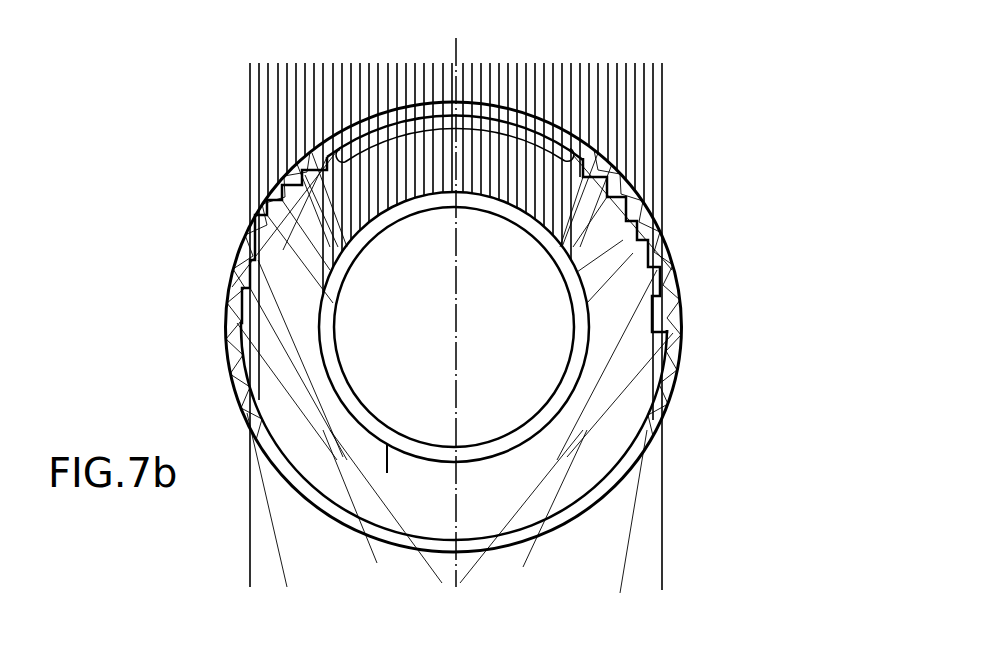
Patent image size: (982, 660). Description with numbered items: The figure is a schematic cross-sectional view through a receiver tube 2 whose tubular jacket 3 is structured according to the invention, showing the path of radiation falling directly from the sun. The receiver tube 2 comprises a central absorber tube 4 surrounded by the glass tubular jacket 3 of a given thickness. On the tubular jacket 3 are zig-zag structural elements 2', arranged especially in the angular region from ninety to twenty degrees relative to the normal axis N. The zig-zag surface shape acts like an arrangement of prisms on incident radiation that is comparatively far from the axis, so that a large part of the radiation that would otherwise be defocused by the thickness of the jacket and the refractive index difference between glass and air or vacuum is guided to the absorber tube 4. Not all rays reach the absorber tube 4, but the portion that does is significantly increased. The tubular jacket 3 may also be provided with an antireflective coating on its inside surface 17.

The receiver tube 2 is at (515, 327).
The zig-zag structural elements 2' is at (417, 244).
The tubular jacket 3 is at (675, 393).
The absorber tube 4 is at (387, 473).
The inside surface 17 is at (342, 145).
The normal axis N is at (453, 573).